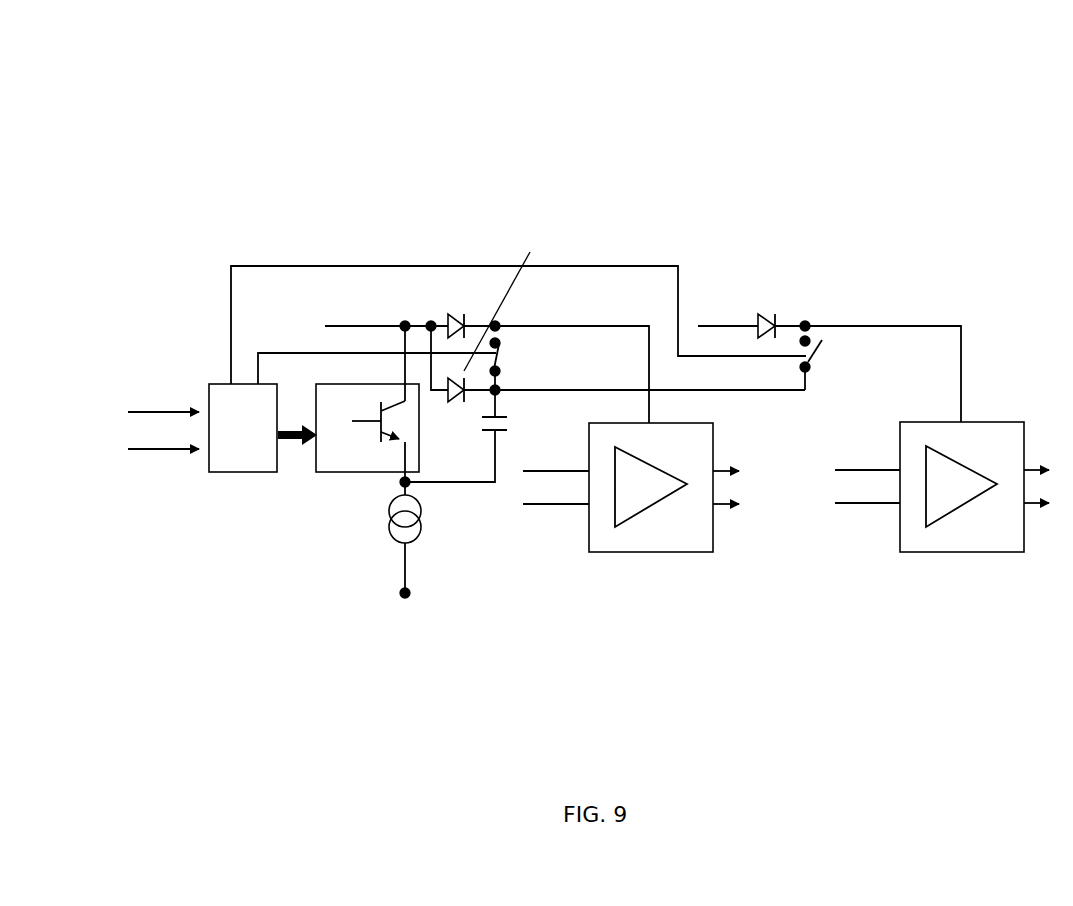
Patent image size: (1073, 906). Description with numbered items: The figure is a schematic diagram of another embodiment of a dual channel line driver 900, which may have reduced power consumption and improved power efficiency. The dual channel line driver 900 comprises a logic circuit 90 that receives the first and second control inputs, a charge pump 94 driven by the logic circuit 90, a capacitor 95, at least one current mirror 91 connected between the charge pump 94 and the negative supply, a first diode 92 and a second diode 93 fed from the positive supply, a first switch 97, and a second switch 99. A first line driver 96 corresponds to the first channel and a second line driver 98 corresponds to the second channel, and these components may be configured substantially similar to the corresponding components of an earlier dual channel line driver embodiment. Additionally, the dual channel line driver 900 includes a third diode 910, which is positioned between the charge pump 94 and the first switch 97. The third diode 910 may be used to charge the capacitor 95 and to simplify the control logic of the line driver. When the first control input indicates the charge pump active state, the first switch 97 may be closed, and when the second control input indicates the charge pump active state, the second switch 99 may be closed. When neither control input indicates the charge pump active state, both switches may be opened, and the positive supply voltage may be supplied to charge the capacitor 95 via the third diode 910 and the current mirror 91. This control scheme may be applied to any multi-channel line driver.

The dual channel line driver 900 is at (300, 92).
The logic circuit 90 is at (254, 473).
The current mirror 91 is at (397, 545).
The first diode 92 is at (447, 313).
The second diode 93 is at (758, 313).
The charge pump 94 is at (368, 473).
The capacitor 95 is at (490, 436).
The first line driver 96 is at (680, 552).
The first switch 97 is at (498, 343).
The second line driver 98 is at (1010, 552).
The second switch 99 is at (822, 352).
The third diode 910 is at (461, 397).